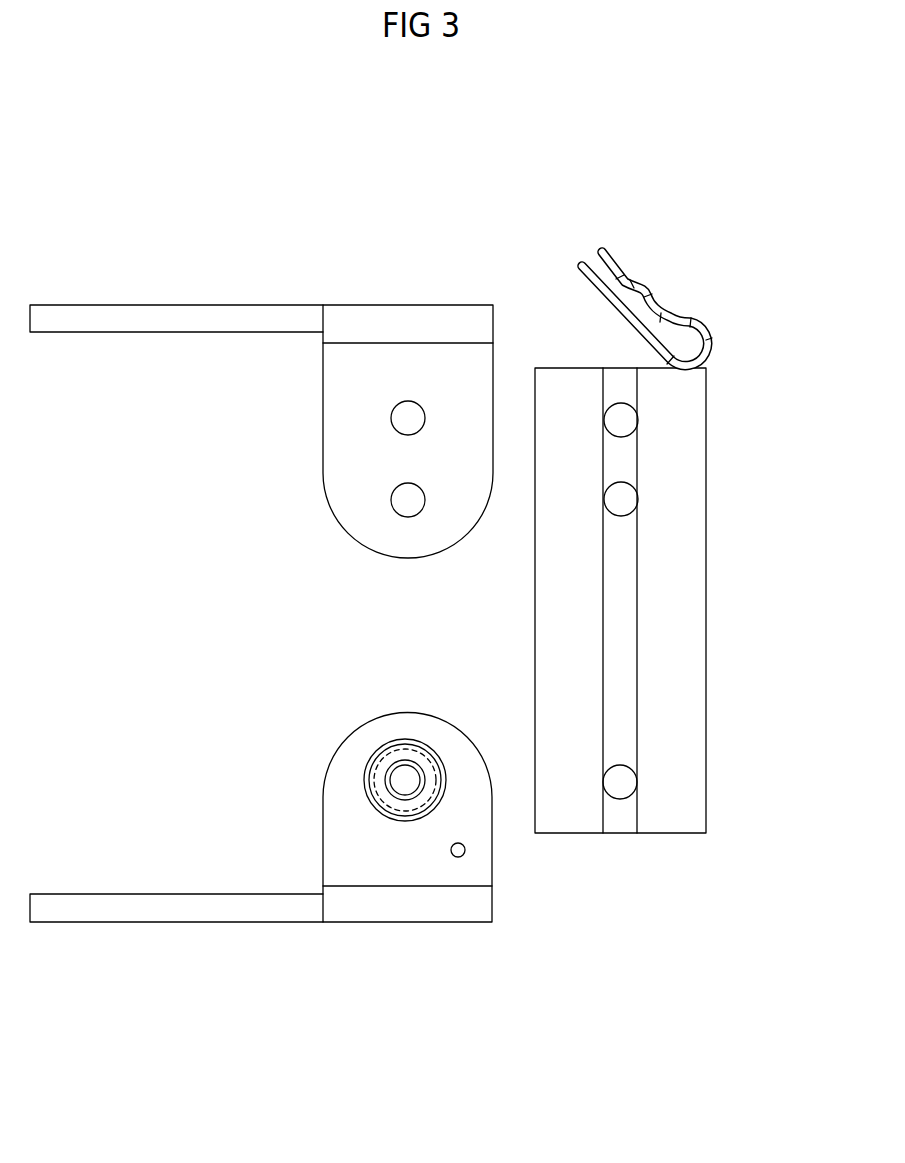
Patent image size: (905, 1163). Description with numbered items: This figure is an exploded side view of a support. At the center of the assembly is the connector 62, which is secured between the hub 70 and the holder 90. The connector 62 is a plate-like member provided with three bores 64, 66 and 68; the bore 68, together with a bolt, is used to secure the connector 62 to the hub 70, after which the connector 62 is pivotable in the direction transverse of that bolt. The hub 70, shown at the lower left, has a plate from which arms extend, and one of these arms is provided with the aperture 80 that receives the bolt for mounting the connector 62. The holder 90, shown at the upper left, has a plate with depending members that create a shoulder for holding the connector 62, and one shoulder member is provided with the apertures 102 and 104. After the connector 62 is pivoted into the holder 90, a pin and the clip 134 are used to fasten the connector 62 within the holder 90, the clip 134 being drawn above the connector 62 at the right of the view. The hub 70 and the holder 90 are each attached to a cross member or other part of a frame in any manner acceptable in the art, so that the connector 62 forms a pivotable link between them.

The connector 62 is at (655, 847).
The bore 64 is at (620, 422).
The bore 66 is at (624, 502).
The bore 68 is at (623, 782).
The hub 70 is at (255, 930).
The aperture 80 is at (368, 768).
The holder 90 is at (233, 298).
The aperture 102 is at (410, 417).
The aperture 104 is at (402, 500).
The clip 134 is at (643, 283).